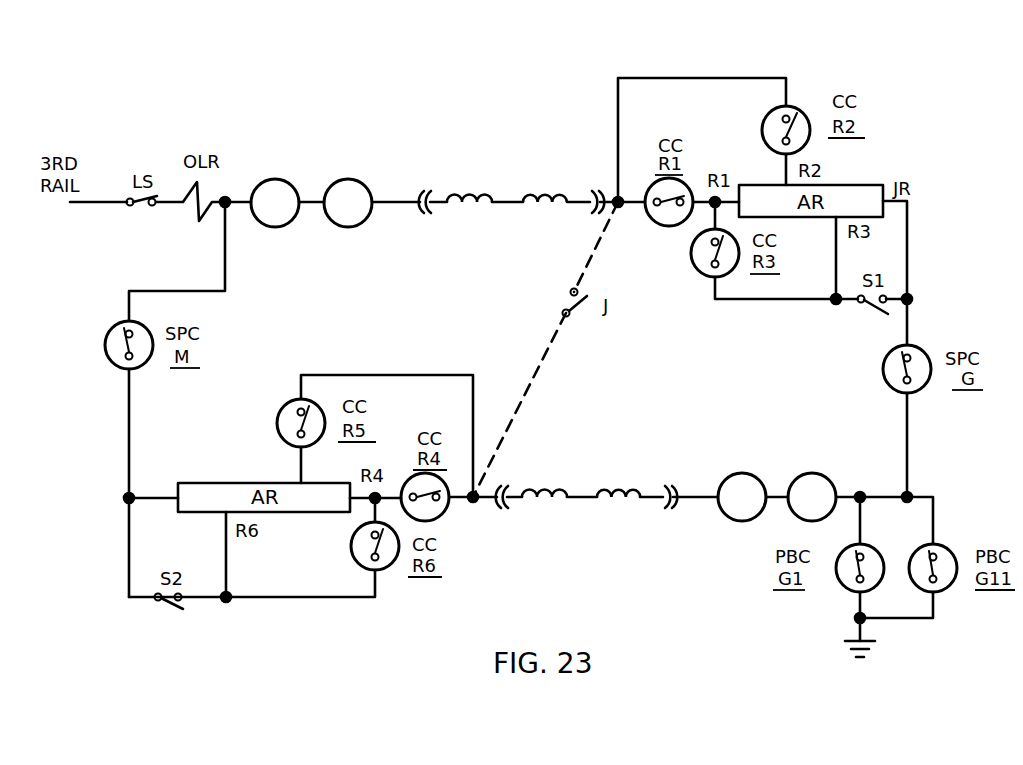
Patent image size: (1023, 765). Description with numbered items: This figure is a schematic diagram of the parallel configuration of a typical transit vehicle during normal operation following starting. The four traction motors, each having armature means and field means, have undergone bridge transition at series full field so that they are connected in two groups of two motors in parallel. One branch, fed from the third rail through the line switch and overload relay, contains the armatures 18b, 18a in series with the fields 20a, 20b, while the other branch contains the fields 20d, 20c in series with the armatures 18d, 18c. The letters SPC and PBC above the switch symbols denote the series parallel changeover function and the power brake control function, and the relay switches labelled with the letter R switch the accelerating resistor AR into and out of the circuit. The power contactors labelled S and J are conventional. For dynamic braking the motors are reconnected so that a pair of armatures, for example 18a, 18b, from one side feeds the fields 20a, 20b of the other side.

The armature means 18a is at (355, 180).
The armature means 18b is at (283, 181).
The armature means 18c is at (818, 474).
The armature means 18d is at (748, 474).
The field means 20a is at (472, 193).
The field means 20b is at (552, 193).
The field means 20c is at (638, 488).
The field means 20d is at (560, 488).